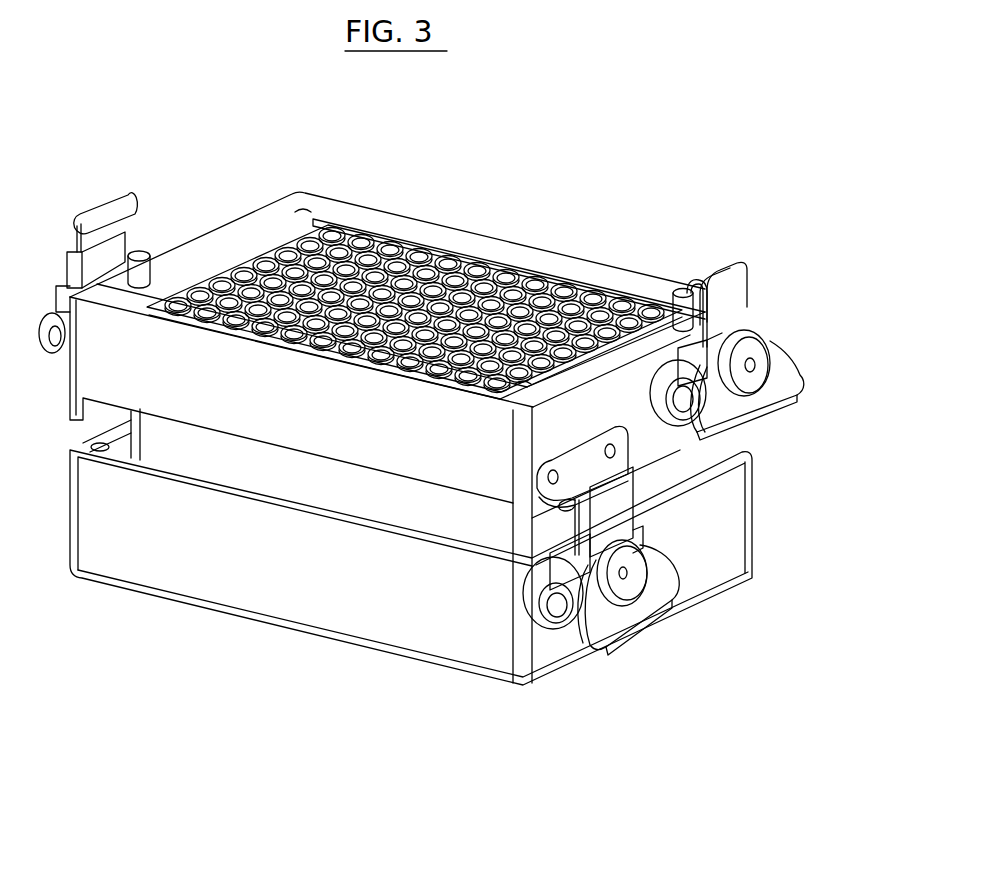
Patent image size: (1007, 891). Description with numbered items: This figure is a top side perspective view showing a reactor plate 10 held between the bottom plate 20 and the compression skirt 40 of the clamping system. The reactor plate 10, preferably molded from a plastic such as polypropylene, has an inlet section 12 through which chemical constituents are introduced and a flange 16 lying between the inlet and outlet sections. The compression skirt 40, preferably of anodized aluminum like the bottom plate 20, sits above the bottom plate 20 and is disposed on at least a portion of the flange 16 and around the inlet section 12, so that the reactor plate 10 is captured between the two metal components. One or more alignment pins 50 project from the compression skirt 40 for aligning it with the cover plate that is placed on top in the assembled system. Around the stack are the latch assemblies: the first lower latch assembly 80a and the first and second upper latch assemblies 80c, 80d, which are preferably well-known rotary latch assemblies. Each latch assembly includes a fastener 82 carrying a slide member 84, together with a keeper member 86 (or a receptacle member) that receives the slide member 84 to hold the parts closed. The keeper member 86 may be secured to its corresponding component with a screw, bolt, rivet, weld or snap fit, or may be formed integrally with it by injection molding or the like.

The reactor plate 10 is at (437, 513).
The inlet section 12 is at (522, 278).
The flange 16 is at (207, 460).
The bottom plate 20 is at (305, 602).
The compression skirt 40 is at (370, 217).
The alignment pin 50 is at (138, 266).
The first lower latch assembly 80a is at (598, 618).
The first upper latch assembly 80c is at (770, 397).
The second upper latch assembly 80d is at (128, 237).
The fastener 82 is at (630, 582).
The slide member 84 is at (600, 503).
The keeper member 86 is at (627, 451).